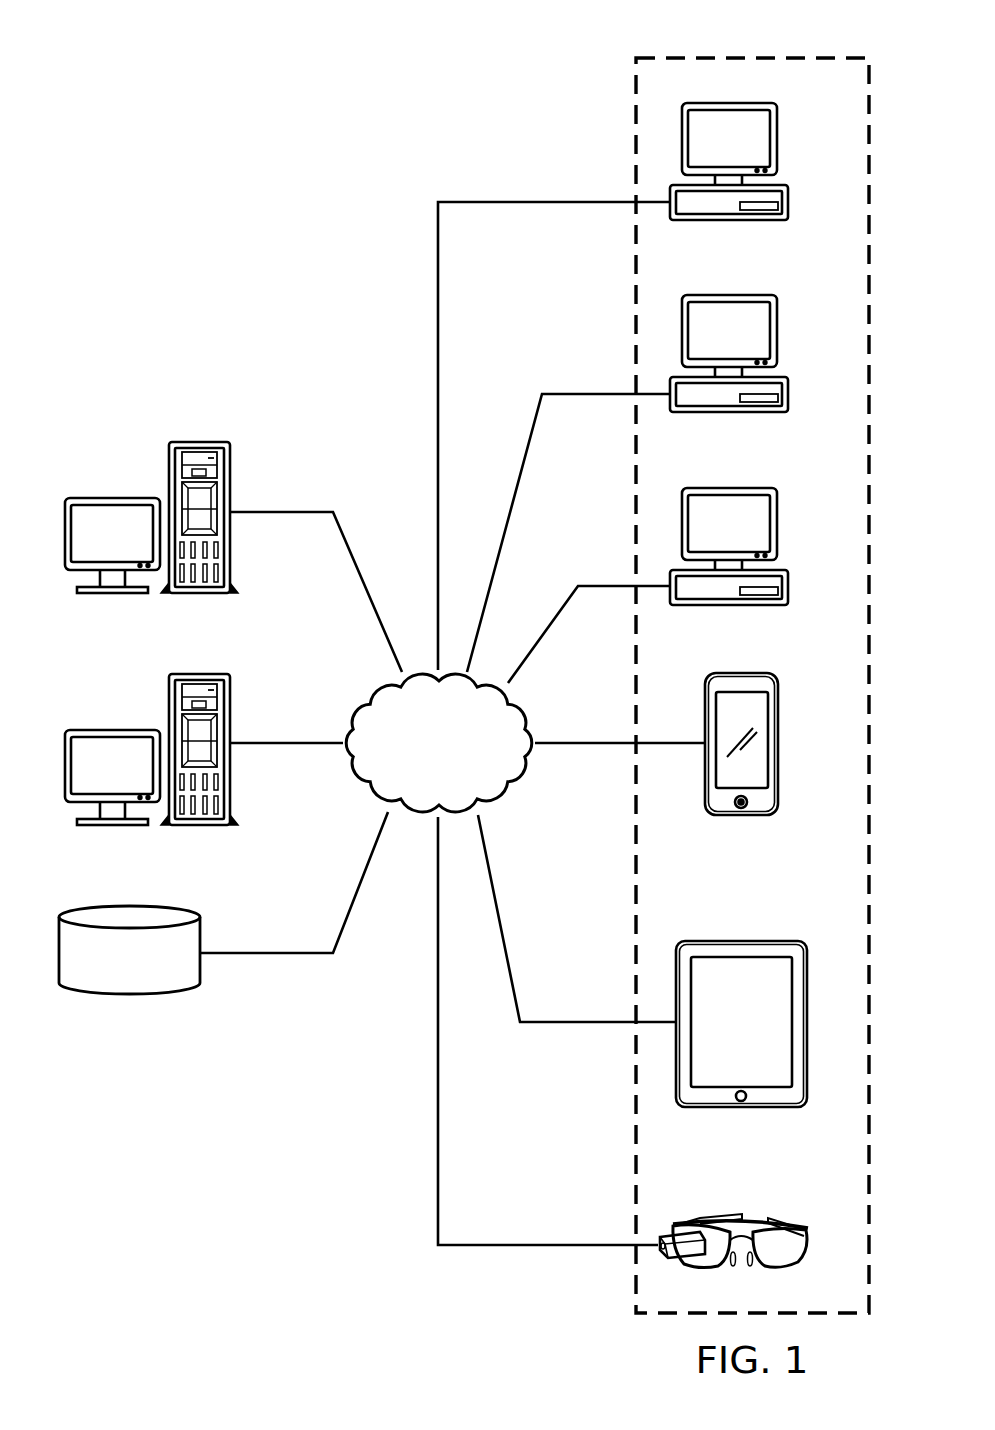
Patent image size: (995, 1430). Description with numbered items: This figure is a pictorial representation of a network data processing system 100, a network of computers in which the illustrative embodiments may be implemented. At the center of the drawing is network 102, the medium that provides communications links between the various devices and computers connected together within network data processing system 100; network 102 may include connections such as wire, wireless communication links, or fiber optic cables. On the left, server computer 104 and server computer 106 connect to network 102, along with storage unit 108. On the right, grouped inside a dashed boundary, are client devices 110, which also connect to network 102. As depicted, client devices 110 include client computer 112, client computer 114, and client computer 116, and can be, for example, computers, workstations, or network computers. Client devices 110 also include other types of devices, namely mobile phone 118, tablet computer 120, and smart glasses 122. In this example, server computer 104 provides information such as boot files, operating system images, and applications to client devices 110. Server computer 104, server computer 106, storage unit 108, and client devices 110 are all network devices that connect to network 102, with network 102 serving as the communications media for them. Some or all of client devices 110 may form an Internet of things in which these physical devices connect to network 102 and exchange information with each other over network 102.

The network data processing system 100 is at (250, 52).
The network 102 is at (459, 777).
The server computer 104 is at (90, 498).
The server computer 106 is at (112, 730).
The storage unit 108 is at (130, 996).
The client devices 110 is at (882, 84).
The client computer 112 is at (778, 137).
The client computer 114 is at (778, 330).
The client computer 116 is at (778, 522).
The mobile phone 118 is at (778, 755).
The tablet computer 120 is at (719, 1039).
The smart glasses 122 is at (786, 1222).